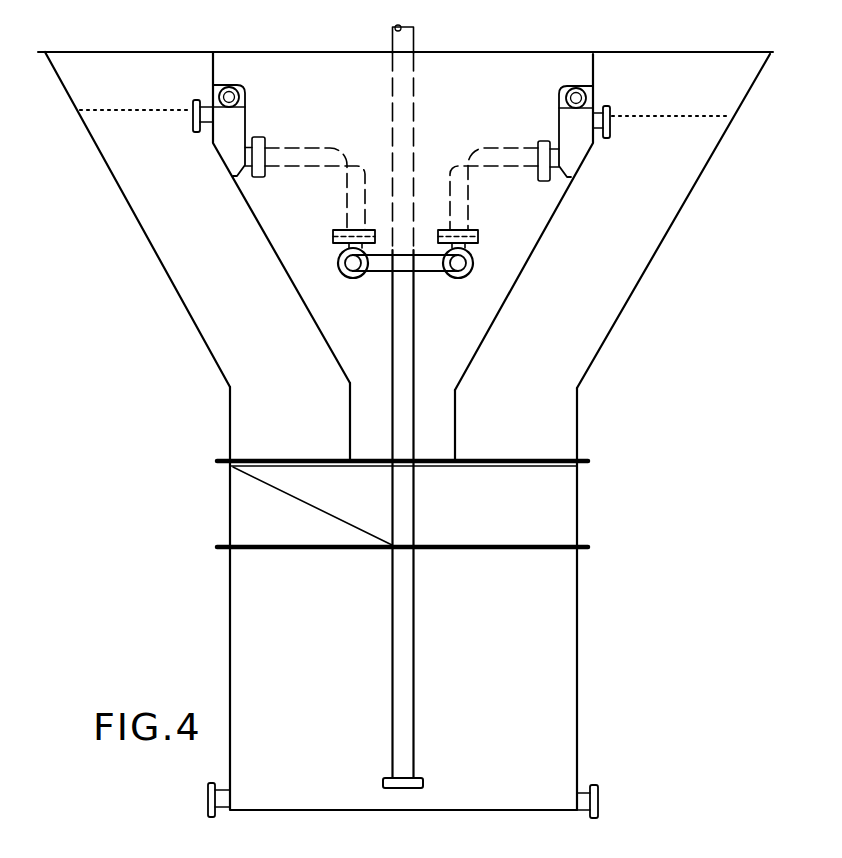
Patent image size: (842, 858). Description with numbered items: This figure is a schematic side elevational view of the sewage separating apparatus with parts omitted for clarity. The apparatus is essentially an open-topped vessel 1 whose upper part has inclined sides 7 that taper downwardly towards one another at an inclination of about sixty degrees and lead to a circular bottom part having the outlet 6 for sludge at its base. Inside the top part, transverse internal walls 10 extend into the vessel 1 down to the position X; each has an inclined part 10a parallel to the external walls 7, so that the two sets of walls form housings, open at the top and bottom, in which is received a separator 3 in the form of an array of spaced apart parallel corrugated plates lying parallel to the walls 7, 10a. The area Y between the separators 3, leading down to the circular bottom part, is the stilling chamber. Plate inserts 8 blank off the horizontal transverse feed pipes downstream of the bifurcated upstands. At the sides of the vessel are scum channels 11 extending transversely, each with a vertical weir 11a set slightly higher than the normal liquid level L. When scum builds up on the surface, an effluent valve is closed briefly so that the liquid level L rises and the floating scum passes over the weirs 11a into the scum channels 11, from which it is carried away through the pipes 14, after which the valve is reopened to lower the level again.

The vessel 1 is at (188, 473).
The separator 3 is at (405, 257).
The outlet 6 is at (579, 790).
The inclined sides 7 is at (183, 303).
The plate inserts 8 is at (333, 232).
The internal walls 10 is at (468, 336).
The inclined part 10a is at (330, 358).
The scum channels 11 is at (222, 153).
The weir 11a is at (247, 87).
The pipes 14 is at (213, 82).
The position X is at (350, 455).
The stilling chamber area Y is at (445, 107).
The liquid level L is at (673, 62).